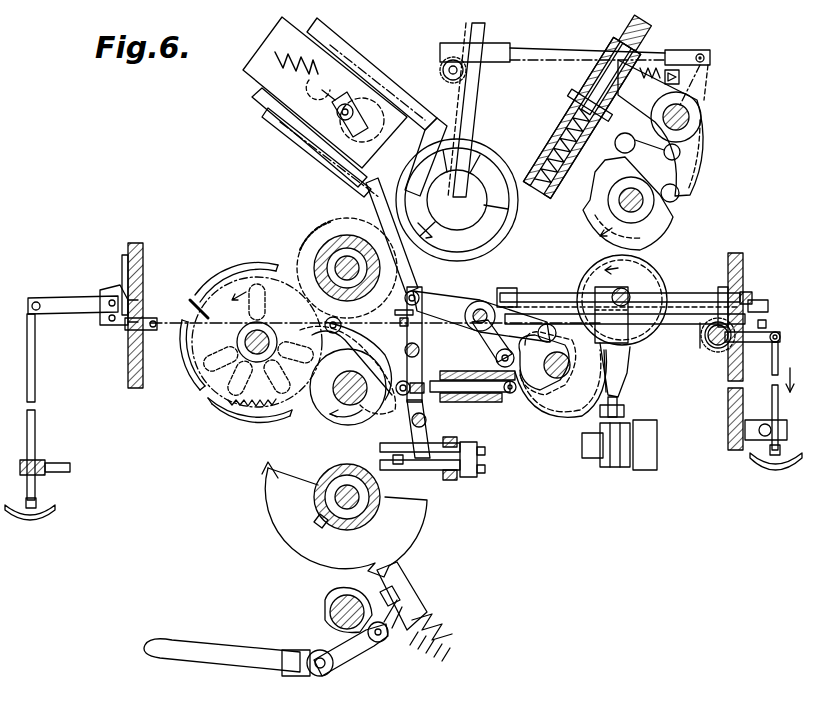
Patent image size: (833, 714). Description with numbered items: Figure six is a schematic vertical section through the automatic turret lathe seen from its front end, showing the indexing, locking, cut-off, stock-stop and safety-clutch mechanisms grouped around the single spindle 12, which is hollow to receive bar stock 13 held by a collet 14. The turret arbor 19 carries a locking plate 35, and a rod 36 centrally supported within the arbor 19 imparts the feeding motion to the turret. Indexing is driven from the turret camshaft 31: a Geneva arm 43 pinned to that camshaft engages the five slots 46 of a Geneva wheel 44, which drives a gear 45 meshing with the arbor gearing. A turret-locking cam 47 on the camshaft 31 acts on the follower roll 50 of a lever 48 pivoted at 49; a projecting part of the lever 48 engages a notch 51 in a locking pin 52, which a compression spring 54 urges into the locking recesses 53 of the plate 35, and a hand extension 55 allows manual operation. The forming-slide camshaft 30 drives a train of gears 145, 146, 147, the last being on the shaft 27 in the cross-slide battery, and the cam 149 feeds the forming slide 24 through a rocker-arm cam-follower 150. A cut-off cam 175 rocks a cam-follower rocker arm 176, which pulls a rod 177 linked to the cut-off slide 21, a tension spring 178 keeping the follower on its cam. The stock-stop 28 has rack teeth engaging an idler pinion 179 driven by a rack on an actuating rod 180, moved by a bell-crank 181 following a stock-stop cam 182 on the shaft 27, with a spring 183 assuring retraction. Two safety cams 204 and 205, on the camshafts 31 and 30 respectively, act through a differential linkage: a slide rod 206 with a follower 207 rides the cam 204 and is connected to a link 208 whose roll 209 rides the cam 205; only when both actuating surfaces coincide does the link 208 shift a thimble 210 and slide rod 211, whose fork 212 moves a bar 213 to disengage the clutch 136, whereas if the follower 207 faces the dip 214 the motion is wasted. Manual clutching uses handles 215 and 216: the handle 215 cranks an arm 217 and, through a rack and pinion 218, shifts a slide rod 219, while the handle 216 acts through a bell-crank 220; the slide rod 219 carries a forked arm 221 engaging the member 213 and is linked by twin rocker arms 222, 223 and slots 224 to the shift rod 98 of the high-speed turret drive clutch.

The spindle 12 is at (462, 256).
The bar stock 13 is at (452, 220).
The collet 14 is at (492, 242).
The arbor 19 is at (348, 256).
The cut-off slide 21 is at (378, 98).
The forming slide 24 is at (552, 128).
The shaft 27 is at (637, 190).
The stock-stop 28 is at (470, 110).
The forming-slide camshaft 30 is at (560, 378).
The turret camshaft 31 is at (330, 395).
The locking plate 35 is at (298, 560).
The rod 36 is at (343, 236).
The Geneva arm 43 is at (360, 352).
The Geneva wheel 44 is at (220, 280).
The gear 45 is at (225, 395).
The slots 46 is at (263, 270).
The turret-locking cam 47 is at (326, 608).
The lever 48 is at (342, 678).
The pivot 49 is at (320, 677).
The follower roll 50 is at (383, 642).
The notch 51 is at (412, 588).
The locking pin 52 is at (420, 610).
The locking recesses 53 is at (270, 537).
The compression spring 54 is at (445, 628).
The hand extension 55 is at (215, 650).
The clutch-actuating rod 98 is at (420, 462).
The clutch 136 is at (610, 470).
The gear 145 is at (545, 414).
The gear 146 is at (592, 270).
The gear 147 is at (668, 228).
The cam 149 is at (630, 294).
The rocker-arm cam-follower 150 is at (700, 150).
The cut-off cam 175 is at (518, 395).
The cam-follower rocker arm 176 is at (533, 330).
The rod 177 is at (404, 262).
The spring 178 is at (280, 53).
The idler pinion 179 is at (448, 80).
The actuating rod 180 is at (533, 50).
The bell-crank 181 is at (705, 88).
The stock-stop cam 182 is at (615, 165).
The spring 183 is at (678, 103).
The safety cam 204 is at (350, 425).
The safety cam 205 is at (535, 392).
The slide rod 206 is at (452, 393).
The follower 207 is at (345, 414).
The link 208 is at (498, 343).
The roll 209 is at (495, 359).
The thimble 210 is at (510, 290).
The slide rod 211 is at (682, 290).
The forked arm 212 is at (615, 375).
The bar 213 is at (620, 412).
The dip 214 is at (305, 354).
The handle 215 is at (790, 462).
The handle 216 is at (32, 520).
The arm 217 is at (765, 336).
The rack and pinion 218 is at (698, 340).
The slide rod 219 is at (695, 314).
The bell-crank 220 is at (60, 298).
The forked arm 221 is at (612, 366).
The rocker arm 222 is at (422, 340).
The rocker arm 223 is at (412, 433).
The slot 224 is at (340, 328).